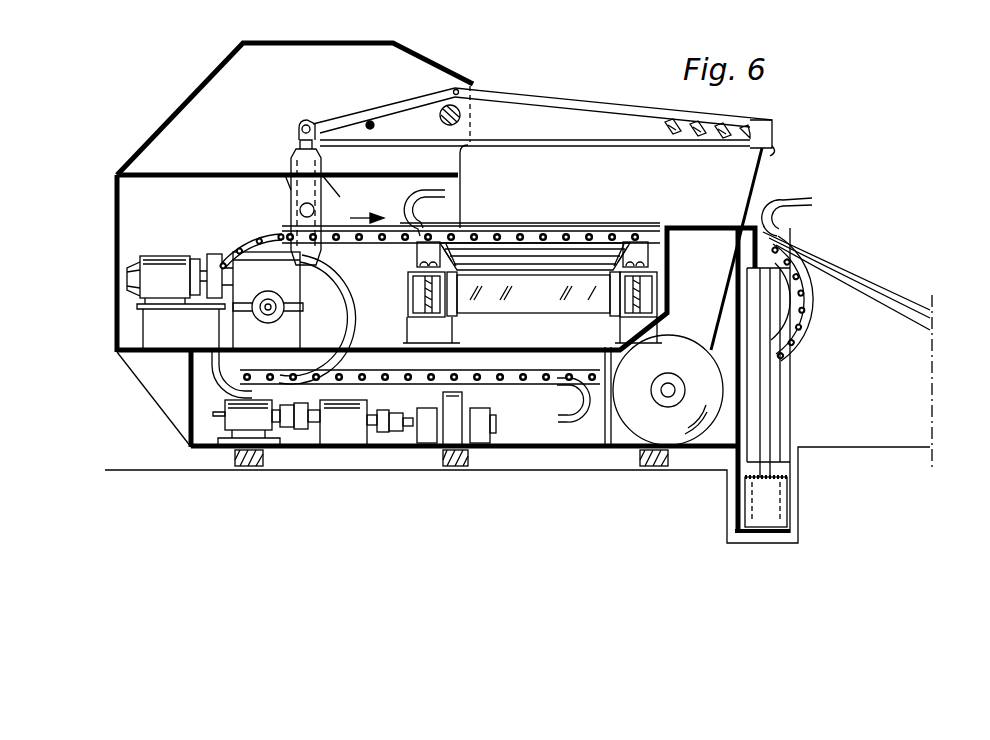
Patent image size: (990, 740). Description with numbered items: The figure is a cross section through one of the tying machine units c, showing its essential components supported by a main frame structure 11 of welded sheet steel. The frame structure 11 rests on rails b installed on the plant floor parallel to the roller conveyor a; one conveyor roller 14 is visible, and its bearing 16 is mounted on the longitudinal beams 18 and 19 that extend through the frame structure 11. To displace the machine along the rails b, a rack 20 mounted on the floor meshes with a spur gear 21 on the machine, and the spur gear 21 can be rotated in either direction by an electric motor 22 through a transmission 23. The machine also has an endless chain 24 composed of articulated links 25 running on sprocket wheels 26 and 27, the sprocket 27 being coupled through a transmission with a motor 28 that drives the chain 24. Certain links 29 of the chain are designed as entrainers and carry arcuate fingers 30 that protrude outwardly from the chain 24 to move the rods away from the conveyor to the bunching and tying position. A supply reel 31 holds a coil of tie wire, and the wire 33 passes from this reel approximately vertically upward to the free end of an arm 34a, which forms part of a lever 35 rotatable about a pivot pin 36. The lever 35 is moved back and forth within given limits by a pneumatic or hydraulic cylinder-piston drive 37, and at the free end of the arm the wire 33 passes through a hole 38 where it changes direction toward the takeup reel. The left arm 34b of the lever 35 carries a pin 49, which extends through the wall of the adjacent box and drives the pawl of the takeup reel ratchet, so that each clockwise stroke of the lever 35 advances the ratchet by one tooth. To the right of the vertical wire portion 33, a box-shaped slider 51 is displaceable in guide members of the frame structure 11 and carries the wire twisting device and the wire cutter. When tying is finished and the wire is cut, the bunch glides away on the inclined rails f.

The main frame structure 11 is at (113, 232).
The roller 14 is at (518, 258).
The bearing 16 is at (415, 258).
The longitudinal beam 18 is at (407, 295).
The longitudinal beam 19 is at (658, 293).
The rack 20 is at (457, 467).
The spur gear 21 is at (452, 400).
The electric motor 22 is at (230, 412).
The transmission 23 is at (338, 440).
The endless chain 24 is at (543, 230).
The link 25 is at (524, 226).
The sprocket wheel 26 is at (806, 341).
The sprocket wheel 27 is at (337, 338).
The motor 28 is at (166, 256).
The entrainer link 29 is at (443, 223).
The arcuate finger 30 is at (409, 196).
The supply reel 31 is at (638, 420).
The wire 33 is at (752, 182).
The arm 34a is at (565, 101).
The left arm 34b is at (338, 128).
The lever 35 is at (440, 96).
The pivot pin 36 is at (462, 117).
The cylinder-piston drive 37 is at (292, 186).
The hole 38 is at (772, 148).
The pin 49 is at (372, 120).
The slider 51 is at (775, 393).
The roller conveyor a is at (495, 311).
The rails b is at (251, 467).
The machine unit c is at (212, 80).
The inclined rails f is at (848, 284).